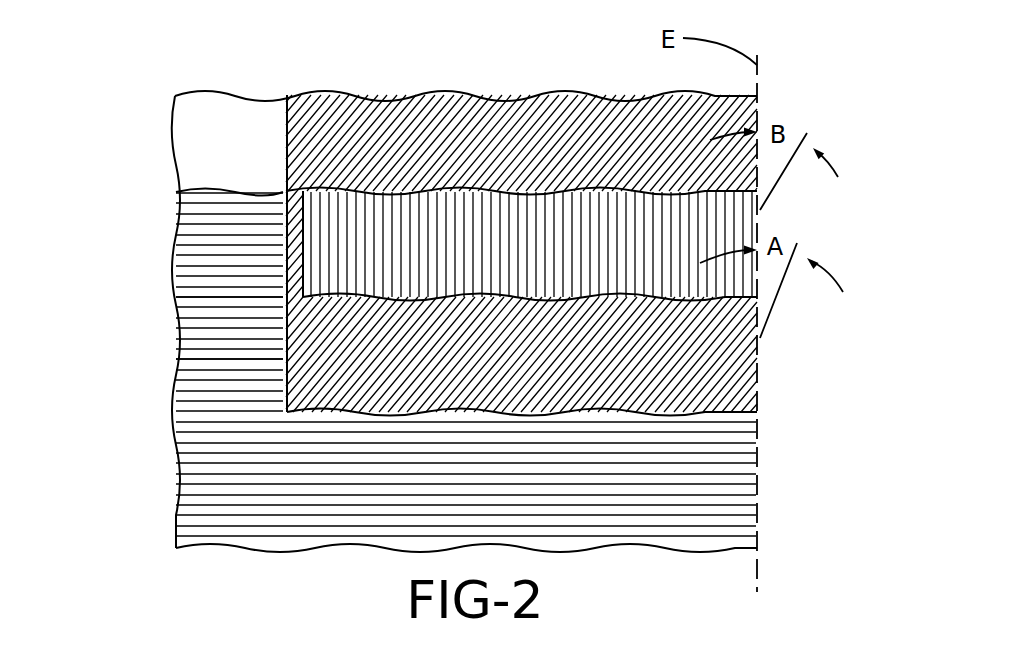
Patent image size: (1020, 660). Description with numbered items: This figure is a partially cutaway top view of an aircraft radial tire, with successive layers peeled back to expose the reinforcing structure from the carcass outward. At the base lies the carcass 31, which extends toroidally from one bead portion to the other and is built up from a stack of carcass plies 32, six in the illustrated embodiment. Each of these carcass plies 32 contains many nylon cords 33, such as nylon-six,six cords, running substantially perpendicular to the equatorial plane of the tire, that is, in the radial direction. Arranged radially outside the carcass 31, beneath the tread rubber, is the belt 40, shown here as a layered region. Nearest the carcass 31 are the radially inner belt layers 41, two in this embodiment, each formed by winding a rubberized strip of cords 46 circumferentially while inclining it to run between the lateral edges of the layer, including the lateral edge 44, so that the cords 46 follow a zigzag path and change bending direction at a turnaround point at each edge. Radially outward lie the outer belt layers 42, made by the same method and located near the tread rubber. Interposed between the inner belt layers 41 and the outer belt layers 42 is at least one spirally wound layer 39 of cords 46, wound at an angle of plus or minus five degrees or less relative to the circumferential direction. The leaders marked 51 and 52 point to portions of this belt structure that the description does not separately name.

The carcass 31 is at (160, 411).
The carcass plies 32 is at (197, 280).
The nylon cords 33 is at (225, 358).
The spirally wound layer 39 is at (475, 248).
The belt 40 is at (788, 335).
The radially inner belt layers 41 is at (683, 380).
The radially outer belt layers 42 is at (392, 142).
The lateral edge 44 is at (280, 262).
The cords 46 is at (727, 397).
The grain boundaries 51 is at (688, 250).
The inner edge 52 is at (302, 223).